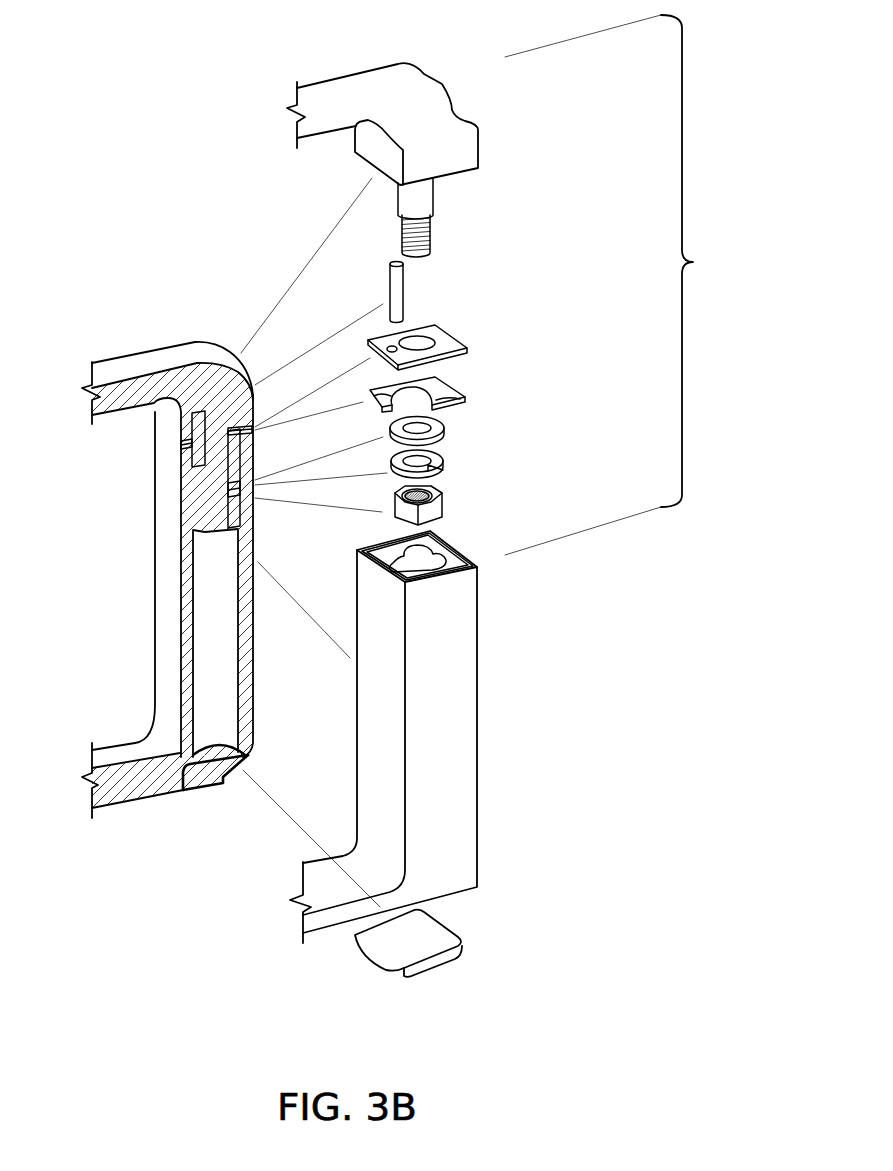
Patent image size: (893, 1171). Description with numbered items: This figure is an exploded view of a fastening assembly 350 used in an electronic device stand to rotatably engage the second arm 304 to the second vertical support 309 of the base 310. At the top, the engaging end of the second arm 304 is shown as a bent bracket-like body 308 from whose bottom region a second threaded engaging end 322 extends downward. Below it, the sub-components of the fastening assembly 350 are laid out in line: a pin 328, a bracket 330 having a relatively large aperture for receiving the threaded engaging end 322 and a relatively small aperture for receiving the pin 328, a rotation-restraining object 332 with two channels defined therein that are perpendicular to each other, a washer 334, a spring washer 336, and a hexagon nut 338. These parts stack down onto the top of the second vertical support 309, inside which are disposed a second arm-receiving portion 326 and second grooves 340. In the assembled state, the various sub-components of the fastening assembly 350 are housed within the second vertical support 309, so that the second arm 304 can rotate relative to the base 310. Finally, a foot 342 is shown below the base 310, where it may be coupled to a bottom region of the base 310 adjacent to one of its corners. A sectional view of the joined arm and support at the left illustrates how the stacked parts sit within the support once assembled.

The second arm 304 is at (351, 58).
The clamp body 308 is at (462, 122).
The second threaded engaging end 322 is at (430, 233).
The pin 328 is at (407, 294).
The bracket 330 is at (480, 350).
The rotation-restraining object 332 is at (468, 400).
The washer 334 is at (443, 432).
The spring washer 336 is at (437, 467).
The hexagon nut 338 is at (442, 510).
The second arm-receiving portion 326 is at (432, 547).
The second grooves 340 is at (465, 565).
The base 310 is at (486, 692).
The second vertical support 309 is at (473, 777).
The foot 342 is at (435, 932).
The fastening assembly 350 is at (624, 285).